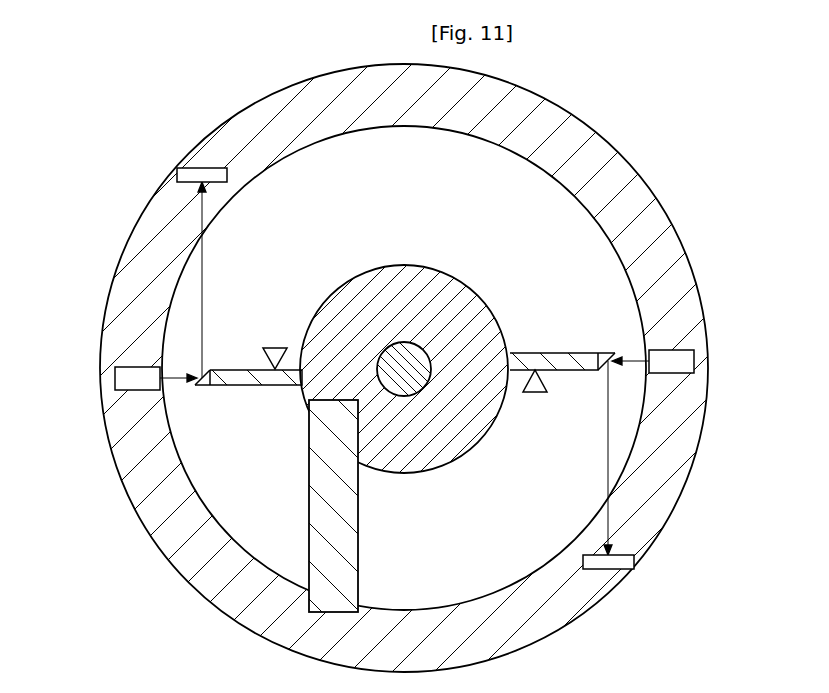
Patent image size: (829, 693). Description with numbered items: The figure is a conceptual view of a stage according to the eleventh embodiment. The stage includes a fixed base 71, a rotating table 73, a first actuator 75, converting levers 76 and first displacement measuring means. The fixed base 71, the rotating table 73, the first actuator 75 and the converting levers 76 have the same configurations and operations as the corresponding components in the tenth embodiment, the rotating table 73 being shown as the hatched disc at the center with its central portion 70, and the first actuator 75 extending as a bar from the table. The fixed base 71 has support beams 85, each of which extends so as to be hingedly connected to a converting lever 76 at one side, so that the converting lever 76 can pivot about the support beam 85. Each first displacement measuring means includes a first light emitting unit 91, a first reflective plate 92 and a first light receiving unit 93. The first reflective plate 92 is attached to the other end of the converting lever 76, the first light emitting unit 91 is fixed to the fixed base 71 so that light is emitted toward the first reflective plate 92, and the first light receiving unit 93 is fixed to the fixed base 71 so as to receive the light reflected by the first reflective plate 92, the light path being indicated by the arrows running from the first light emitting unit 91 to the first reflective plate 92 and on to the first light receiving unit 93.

The rotation shaft 70 is at (400, 366).
The fixed base 71 is at (667, 250).
The rotating table 73 is at (420, 465).
The first actuator 75 is at (325, 498).
The converting lever 76 is at (265, 382).
The support beam 85 is at (275, 347).
The first light emitting unit 91 is at (125, 378).
The first reflective plate 92 is at (178, 384).
The first light receiving unit 93 is at (190, 173).